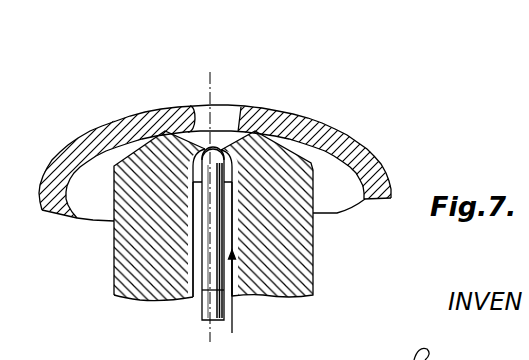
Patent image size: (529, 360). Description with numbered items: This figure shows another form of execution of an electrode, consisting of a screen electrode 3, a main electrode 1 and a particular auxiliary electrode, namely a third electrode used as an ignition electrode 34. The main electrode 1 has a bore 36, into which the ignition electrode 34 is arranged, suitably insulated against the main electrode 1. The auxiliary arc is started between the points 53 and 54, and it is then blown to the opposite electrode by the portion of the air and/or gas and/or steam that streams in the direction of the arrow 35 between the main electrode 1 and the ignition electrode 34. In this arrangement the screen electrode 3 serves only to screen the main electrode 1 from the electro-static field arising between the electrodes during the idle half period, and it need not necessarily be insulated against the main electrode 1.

The main electrode 1 is at (293, 283).
The screen electrode 3 is at (338, 139).
The ignition electrode 34 is at (203, 298).
The arrow 35 is at (243, 297).
The bore 36 is at (233, 235).
The arc starting point 53 is at (166, 132).
The arc starting point 54 is at (227, 150).